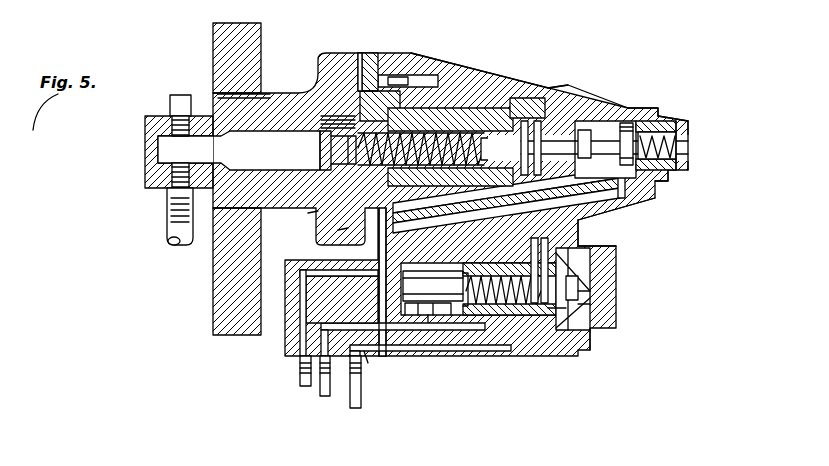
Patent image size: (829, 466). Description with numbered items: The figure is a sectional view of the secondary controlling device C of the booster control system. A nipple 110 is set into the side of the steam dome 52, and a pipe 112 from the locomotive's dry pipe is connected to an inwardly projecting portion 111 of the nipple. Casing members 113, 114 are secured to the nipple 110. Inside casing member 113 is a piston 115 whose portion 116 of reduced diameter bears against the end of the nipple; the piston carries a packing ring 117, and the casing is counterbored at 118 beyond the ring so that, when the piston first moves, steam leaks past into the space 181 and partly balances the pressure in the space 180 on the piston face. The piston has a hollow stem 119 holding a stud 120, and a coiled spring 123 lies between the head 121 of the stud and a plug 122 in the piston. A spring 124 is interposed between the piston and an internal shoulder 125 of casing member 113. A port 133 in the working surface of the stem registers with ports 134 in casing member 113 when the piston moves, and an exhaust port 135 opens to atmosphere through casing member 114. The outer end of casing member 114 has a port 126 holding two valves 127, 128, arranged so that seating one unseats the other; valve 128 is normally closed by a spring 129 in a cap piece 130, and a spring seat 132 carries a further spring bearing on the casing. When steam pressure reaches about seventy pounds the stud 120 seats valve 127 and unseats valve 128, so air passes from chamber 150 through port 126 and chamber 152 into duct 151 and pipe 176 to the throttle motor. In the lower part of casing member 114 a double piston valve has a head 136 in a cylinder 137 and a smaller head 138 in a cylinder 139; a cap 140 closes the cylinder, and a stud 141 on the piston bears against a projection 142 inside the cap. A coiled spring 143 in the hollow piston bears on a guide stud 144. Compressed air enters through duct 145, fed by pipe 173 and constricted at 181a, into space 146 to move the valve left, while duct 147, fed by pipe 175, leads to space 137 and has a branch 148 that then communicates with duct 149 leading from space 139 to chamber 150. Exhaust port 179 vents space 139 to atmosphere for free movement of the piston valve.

The steam dome 52 is at (205, 28).
The nipple 110 is at (272, 83).
The inwardly projecting portion 111 is at (137, 152).
The pipe 112 is at (160, 206).
The casing member 113 is at (353, 45).
The casing member 114 is at (530, 78).
The piston 115 is at (300, 205).
The portion of reduced diameter 116 is at (162, 233).
The packing ring 117 is at (330, 222).
The counterbore 118 is at (380, 243).
The hollow stem 119 is at (462, 85).
The stud 120 is at (578, 122).
The head 121 is at (560, 113).
The plug 122 is at (327, 123).
The coiled spring 123 is at (445, 100).
The spring 124 is at (400, 124).
The internal shoulder 125 is at (610, 222).
The port 126 is at (625, 100).
The valve 127 is at (618, 115).
The valve 128 is at (628, 103).
The spring 129 is at (680, 126).
The cap piece 130 is at (681, 142).
The spring seat 132 is at (540, 80).
The port 133 is at (515, 90).
The ports 134 is at (520, 113).
The exhaust port 135 is at (533, 113).
The head 136 is at (560, 300).
The cylinder 137 is at (510, 317).
The head 138 is at (450, 303).
The cylinder 139 is at (427, 307).
The cap 140 is at (590, 297).
The stud 141 is at (590, 323).
The projection 142 is at (585, 283).
The coiled spring 143 is at (510, 307).
The guide stud 144 is at (423, 310).
The duct 145 is at (457, 303).
The space 146 is at (585, 296).
The duct 147 is at (450, 310).
The branch 148 is at (473, 307).
The duct 149 is at (600, 210).
The chamber 150 is at (667, 162).
The duct 151 is at (603, 110).
The chamber 152 is at (612, 125).
The pipe 173 is at (347, 400).
The pipe 175 is at (316, 388).
The pipe 176 is at (295, 376).
The exhaust port 179 is at (376, 350).
The space 180 is at (193, 106).
The space 181 is at (400, 68).
The constriction 181a is at (358, 358).
The secondary controlling device C is at (494, 55).